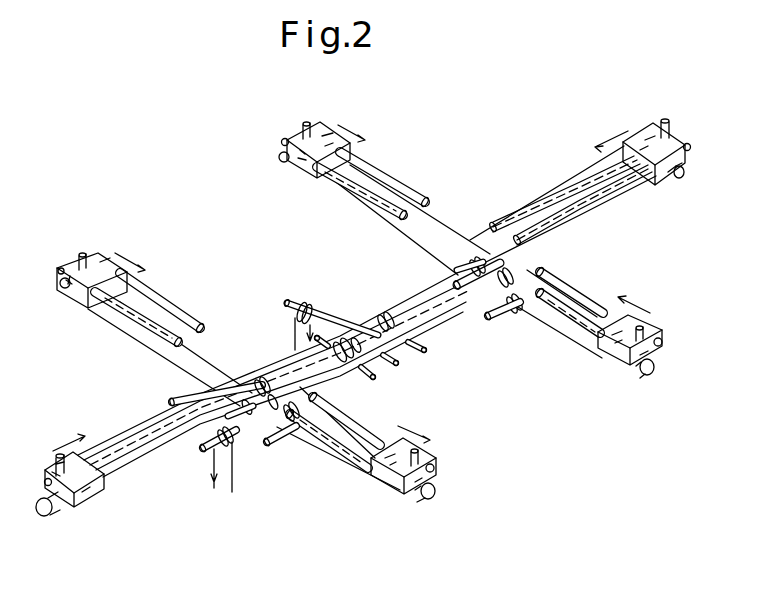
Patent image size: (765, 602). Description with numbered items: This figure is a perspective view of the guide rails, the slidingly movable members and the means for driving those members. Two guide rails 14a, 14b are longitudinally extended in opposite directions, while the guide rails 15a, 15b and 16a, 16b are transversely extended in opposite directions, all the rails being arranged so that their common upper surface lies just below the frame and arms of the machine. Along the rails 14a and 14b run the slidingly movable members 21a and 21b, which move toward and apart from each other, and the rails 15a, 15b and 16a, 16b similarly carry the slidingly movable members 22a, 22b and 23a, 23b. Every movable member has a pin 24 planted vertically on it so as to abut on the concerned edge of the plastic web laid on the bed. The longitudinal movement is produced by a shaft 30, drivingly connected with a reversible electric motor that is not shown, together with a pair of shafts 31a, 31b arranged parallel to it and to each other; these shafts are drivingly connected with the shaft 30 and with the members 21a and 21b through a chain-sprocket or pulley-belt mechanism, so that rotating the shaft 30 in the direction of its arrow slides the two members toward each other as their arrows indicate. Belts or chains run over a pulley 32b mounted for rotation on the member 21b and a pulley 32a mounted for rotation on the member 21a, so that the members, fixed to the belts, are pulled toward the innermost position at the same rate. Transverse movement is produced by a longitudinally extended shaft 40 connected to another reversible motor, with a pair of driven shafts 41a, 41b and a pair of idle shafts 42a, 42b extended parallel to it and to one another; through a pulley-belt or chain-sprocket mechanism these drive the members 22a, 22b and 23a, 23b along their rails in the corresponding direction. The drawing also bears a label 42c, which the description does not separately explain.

The guide rail 14a is at (141, 448).
The guide rail 14b is at (566, 198).
The guide rail 15a is at (146, 285).
The guide rail 15b is at (330, 445).
The guide rail 16a is at (346, 172).
The guide rail 16b is at (578, 294).
The slidingly movable member 21a is at (93, 491).
The slidingly movable member 21b is at (646, 135).
The slidingly movable member 22a is at (98, 253).
The slidingly movable member 22b is at (388, 475).
The slidingly movable member 23a is at (314, 130).
The slidingly movable member 23b is at (620, 343).
The pin 24 is at (433, 452).
The shaft 30 is at (297, 300).
The shaft 31a is at (367, 374).
The shaft 31b is at (420, 342).
The pulley 32a is at (45, 516).
The pulley 32b is at (682, 168).
The shaft 40 is at (205, 450).
The driven shaft 41a is at (243, 387).
The driven shaft 41b is at (290, 430).
The idle shaft 42a is at (170, 399).
The idle shaft 42b is at (273, 447).
The roller shaft 42c is at (443, 283).